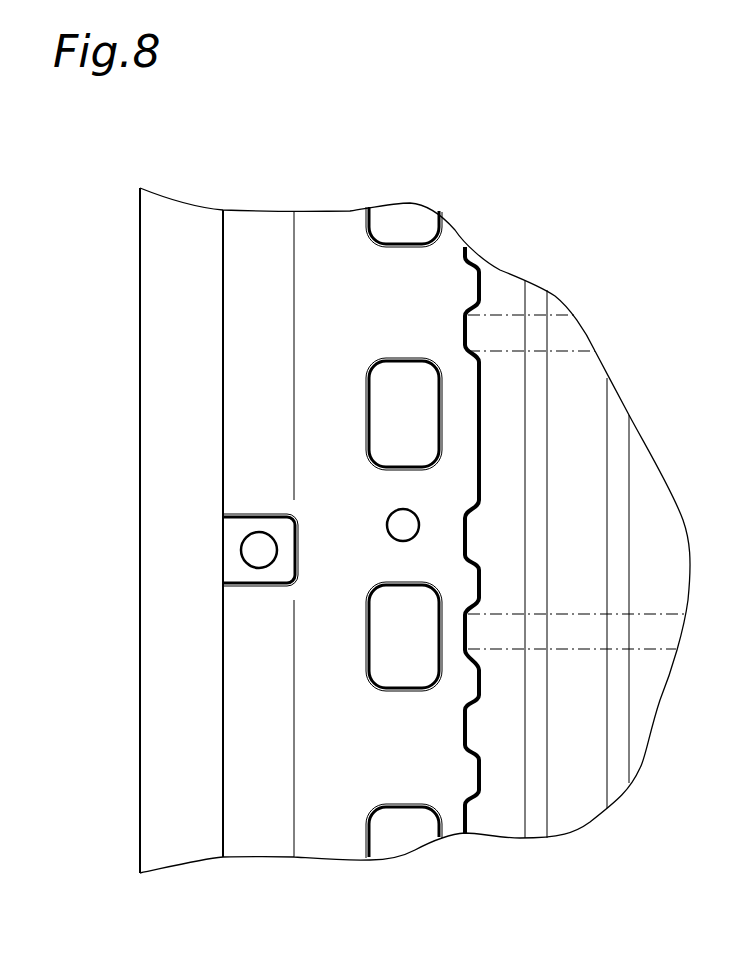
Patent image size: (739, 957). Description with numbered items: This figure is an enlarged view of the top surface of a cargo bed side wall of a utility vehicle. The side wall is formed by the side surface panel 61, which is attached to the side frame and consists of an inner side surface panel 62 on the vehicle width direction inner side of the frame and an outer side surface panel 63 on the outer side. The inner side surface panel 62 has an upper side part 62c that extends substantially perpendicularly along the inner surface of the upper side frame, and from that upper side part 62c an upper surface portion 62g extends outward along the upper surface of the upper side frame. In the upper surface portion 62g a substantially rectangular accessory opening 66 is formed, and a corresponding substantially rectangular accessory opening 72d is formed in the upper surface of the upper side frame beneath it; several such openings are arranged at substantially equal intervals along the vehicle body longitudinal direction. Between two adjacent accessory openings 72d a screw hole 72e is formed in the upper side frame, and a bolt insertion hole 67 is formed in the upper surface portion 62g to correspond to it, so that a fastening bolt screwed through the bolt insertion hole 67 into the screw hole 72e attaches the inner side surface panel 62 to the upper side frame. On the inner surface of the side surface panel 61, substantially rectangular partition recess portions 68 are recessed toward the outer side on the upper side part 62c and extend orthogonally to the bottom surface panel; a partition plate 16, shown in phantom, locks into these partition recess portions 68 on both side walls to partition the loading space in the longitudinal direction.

The partition plate 16 is at (563, 352).
The side surface panel 61 is at (134, 341).
The inner side surface panel 62 is at (523, 540).
The upper side part 62c is at (479, 680).
The upper surface portion 62g is at (452, 583).
The outer side surface panel 63 is at (139, 404).
The accessory opening 66 is at (449, 532).
The bolt insertion hole 67 is at (450, 512).
The partition recess portion 68 is at (470, 353).
The accessory opening 72d is at (367, 457).
The screw hole 72e is at (391, 537).